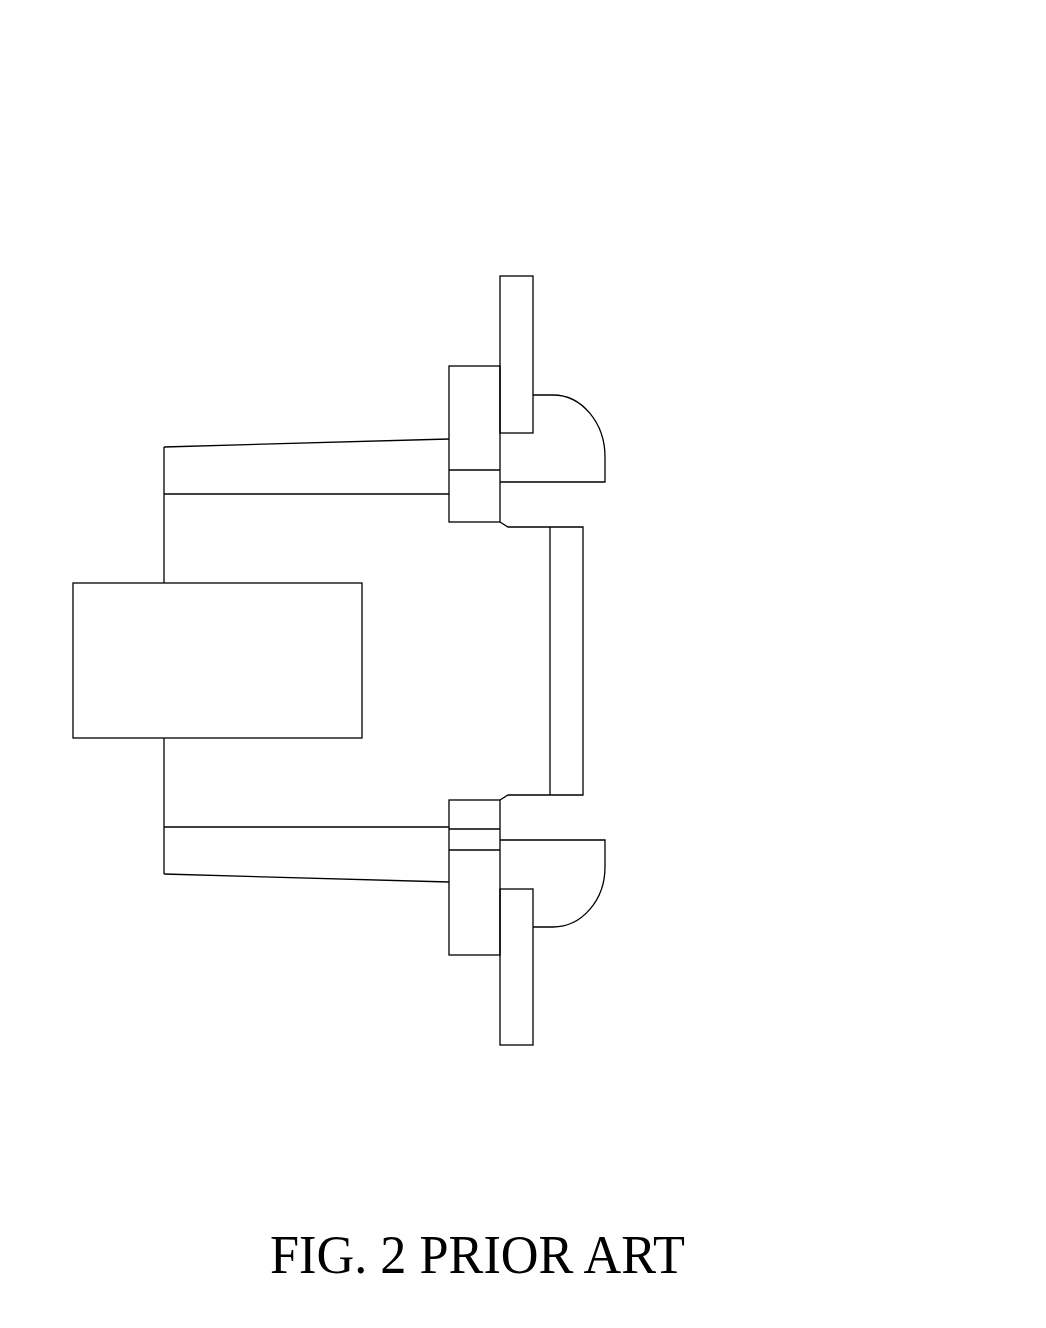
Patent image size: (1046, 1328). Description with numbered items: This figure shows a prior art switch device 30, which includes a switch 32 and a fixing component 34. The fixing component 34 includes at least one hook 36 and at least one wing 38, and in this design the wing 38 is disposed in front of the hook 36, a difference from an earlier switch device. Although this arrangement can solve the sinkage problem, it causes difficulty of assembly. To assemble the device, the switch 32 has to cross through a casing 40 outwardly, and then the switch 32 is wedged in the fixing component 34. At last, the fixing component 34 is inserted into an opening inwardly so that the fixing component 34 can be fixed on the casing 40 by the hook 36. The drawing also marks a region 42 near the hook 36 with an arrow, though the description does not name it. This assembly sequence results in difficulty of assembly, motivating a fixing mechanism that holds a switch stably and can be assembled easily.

The switch device 30 is at (788, 80).
The switch 32 is at (88, 657).
The fixing component 34 is at (323, 452).
The hook 36 is at (565, 440).
The wing 38 is at (473, 378).
The casing 40 is at (517, 330).
The gap 42 is at (548, 510).